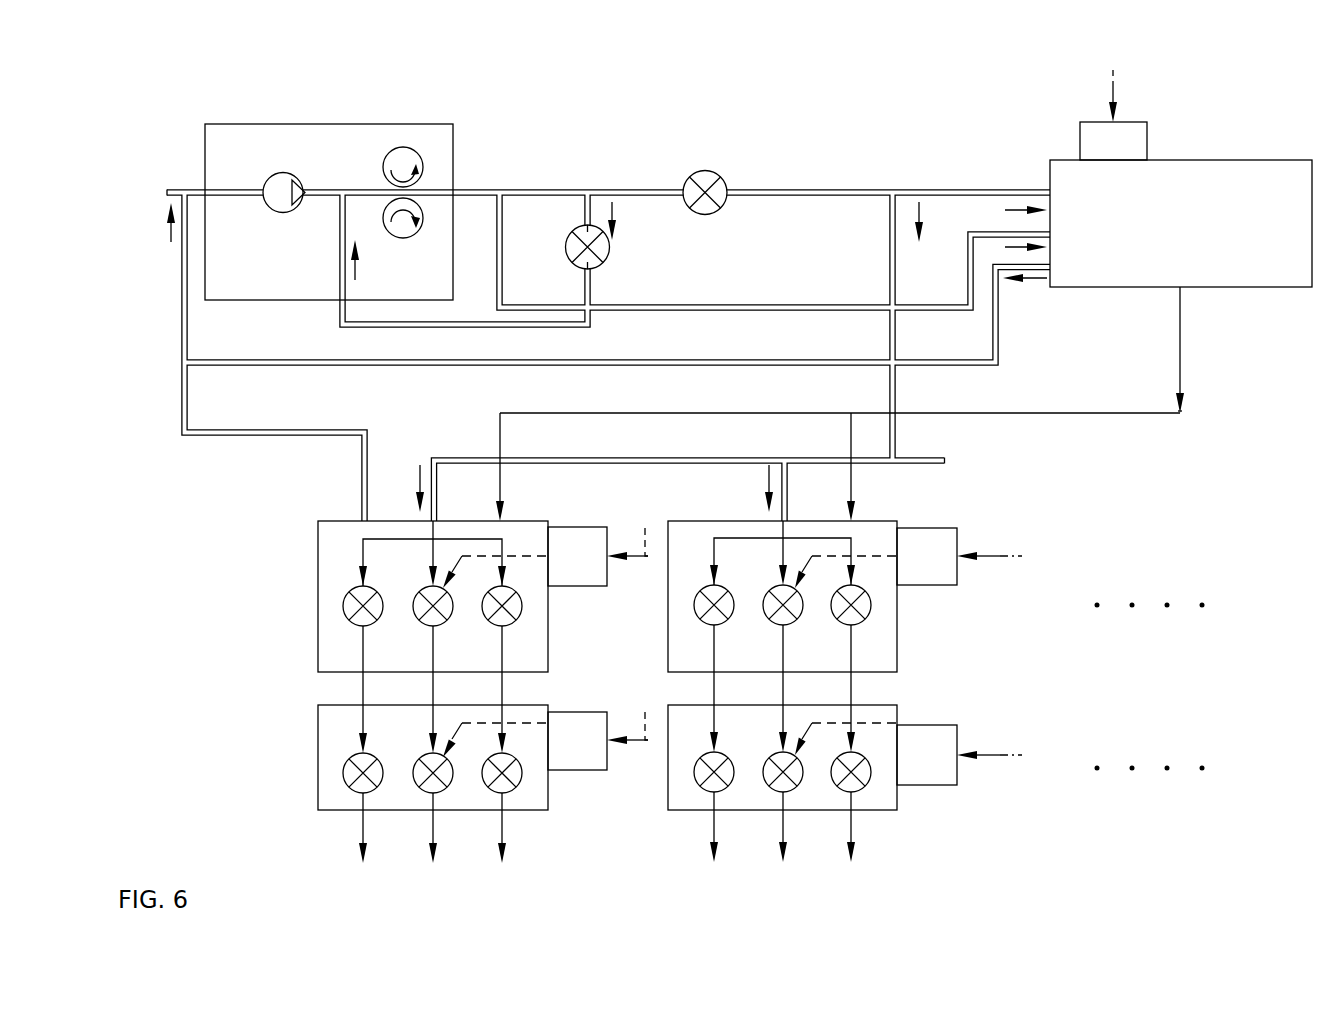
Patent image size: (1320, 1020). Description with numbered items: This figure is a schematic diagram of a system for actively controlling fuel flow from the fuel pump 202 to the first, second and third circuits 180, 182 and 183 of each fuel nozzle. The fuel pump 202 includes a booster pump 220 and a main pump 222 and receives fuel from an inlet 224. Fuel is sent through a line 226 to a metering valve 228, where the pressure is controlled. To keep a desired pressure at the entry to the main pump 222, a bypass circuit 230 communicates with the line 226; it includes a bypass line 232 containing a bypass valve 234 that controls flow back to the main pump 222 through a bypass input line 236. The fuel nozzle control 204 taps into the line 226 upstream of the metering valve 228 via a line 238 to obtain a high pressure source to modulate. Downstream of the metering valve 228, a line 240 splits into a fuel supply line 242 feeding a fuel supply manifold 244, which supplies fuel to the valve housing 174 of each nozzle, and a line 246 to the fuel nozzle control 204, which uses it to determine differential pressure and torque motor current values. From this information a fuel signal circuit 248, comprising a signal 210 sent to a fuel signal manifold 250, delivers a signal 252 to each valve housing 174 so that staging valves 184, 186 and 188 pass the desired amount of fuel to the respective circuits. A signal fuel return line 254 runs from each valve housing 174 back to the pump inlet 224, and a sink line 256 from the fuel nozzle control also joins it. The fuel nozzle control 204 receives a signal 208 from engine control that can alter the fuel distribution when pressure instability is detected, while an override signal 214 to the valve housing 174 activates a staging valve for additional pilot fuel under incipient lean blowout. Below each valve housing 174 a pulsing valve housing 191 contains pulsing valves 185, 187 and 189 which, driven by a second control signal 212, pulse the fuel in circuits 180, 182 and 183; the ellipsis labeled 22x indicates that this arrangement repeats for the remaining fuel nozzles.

The valve housing 174 is at (549, 645).
The first circuit 180 is at (360, 828).
The second circuit 182 is at (428, 833).
The third circuit 183 is at (498, 833).
The staging valve 184 is at (345, 610).
The pulsing valve 185 is at (346, 780).
The staging valve 186 is at (428, 626).
The pulsing valve 187 is at (430, 753).
The staging valve 188 is at (498, 626).
The pulsing valve 189 is at (506, 793).
The pulsing valve housing 191 is at (318, 748).
The fuel pump 202 is at (328, 124).
The fuel nozzle control 204 is at (1240, 159).
The signal 208 is at (1117, 90).
The signal 210 is at (1182, 340).
The second control signal 212 is at (640, 750).
The override signal 214 is at (644, 559).
The booster pump 220 is at (283, 213).
The main pump 222 is at (388, 153).
The inlet 224 is at (190, 190).
The line 226 is at (478, 190).
The metering valve 228 is at (699, 171).
The bypass circuit 230 is at (615, 275).
The bypass line 232 is at (585, 225).
The bypass valve 234 is at (568, 256).
The bypass input line 236 is at (468, 329).
The line 238 is at (729, 305).
The line 240 is at (765, 190).
The fuel supply line 242 is at (890, 237).
The fuel supply manifold 244 is at (638, 458).
The line 246 is at (905, 191).
The fuel signal circuit 248 is at (1207, 427).
The fuel signal manifold 250 is at (957, 413).
The signal 252 is at (503, 486).
The signal fuel return line 254 is at (220, 436).
The sink line 256 is at (334, 366).
The additional manifolds 22x is at (1192, 688).